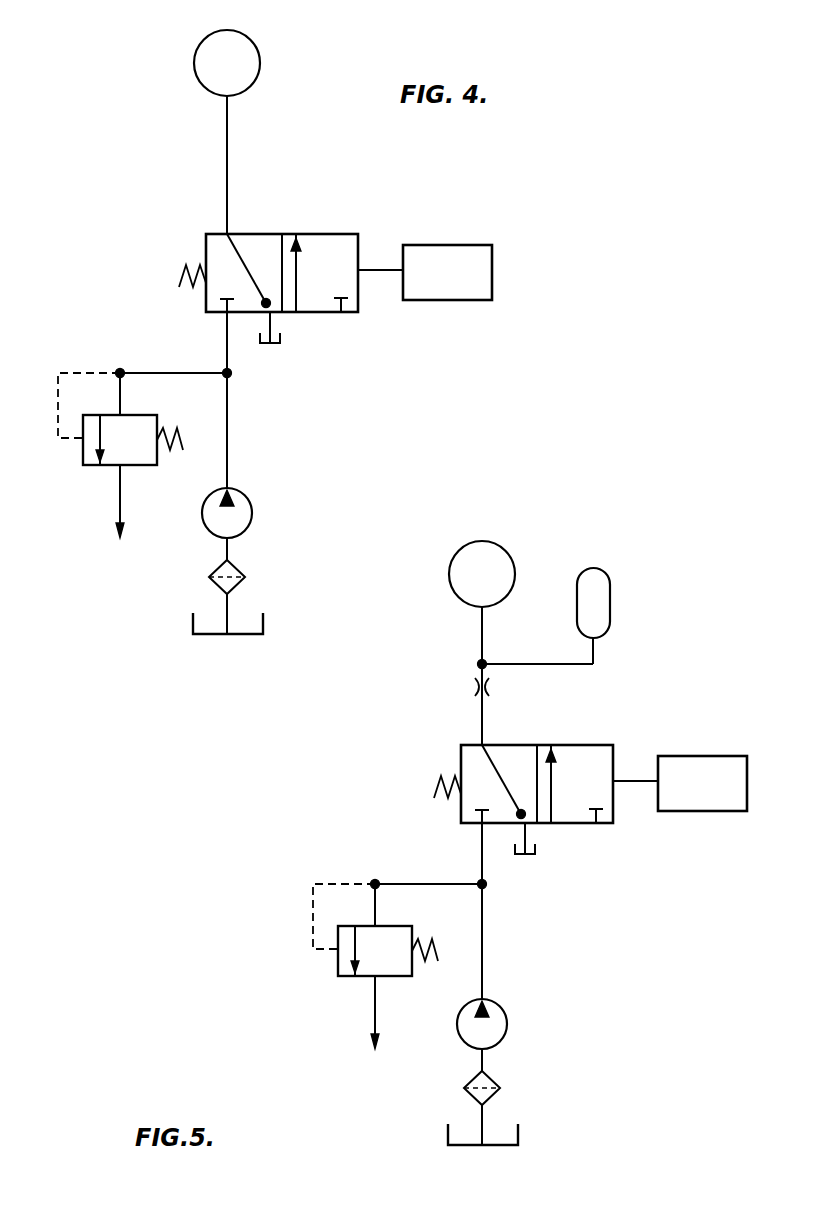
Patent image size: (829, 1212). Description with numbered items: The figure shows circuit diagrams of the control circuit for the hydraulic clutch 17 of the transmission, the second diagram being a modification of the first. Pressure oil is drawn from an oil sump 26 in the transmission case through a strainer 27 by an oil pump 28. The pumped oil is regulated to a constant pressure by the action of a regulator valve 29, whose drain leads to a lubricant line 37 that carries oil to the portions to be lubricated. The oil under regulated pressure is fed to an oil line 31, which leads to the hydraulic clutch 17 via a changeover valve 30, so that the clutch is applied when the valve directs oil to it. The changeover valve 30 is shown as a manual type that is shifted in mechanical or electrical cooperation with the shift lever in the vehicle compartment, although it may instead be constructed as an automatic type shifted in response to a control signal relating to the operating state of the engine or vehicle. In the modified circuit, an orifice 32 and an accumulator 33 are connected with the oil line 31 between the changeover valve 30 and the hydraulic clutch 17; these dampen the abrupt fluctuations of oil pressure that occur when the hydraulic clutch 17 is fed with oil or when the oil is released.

In FIG. 4, the hydraulic clutch 17 is at (261, 58).
In FIG. 5, the hydraulic clutch 17 is at (500, 570).
In FIG. 4, the oil sump 26 is at (255, 636).
In FIG. 5, the oil sump 26 is at (506, 1141).
In FIG. 4, the strainer 27 is at (246, 577).
In FIG. 5, the strainer 27 is at (510, 1087).
In FIG. 4, the oil pump 28 is at (252, 505).
In FIG. 5, the oil pump 28 is at (507, 1024).
In FIG. 4, the regulator valve 29 is at (83, 463).
In FIG. 5, the regulator valve 29 is at (355, 945).
In FIG. 4, the changeover valve 30 is at (298, 232).
In FIG. 5, the changeover valve 30 is at (590, 781).
In FIG. 4, the oil line 31 is at (225, 157).
In FIG. 5, the oil line 31 is at (510, 676).
In FIG. 5, the orifice 32 is at (461, 698).
In FIG. 5, the accumulator 33 is at (571, 618).
In FIG. 4, the lubricant line 37 is at (123, 513).
In FIG. 5, the lubricant line 37 is at (362, 1028).